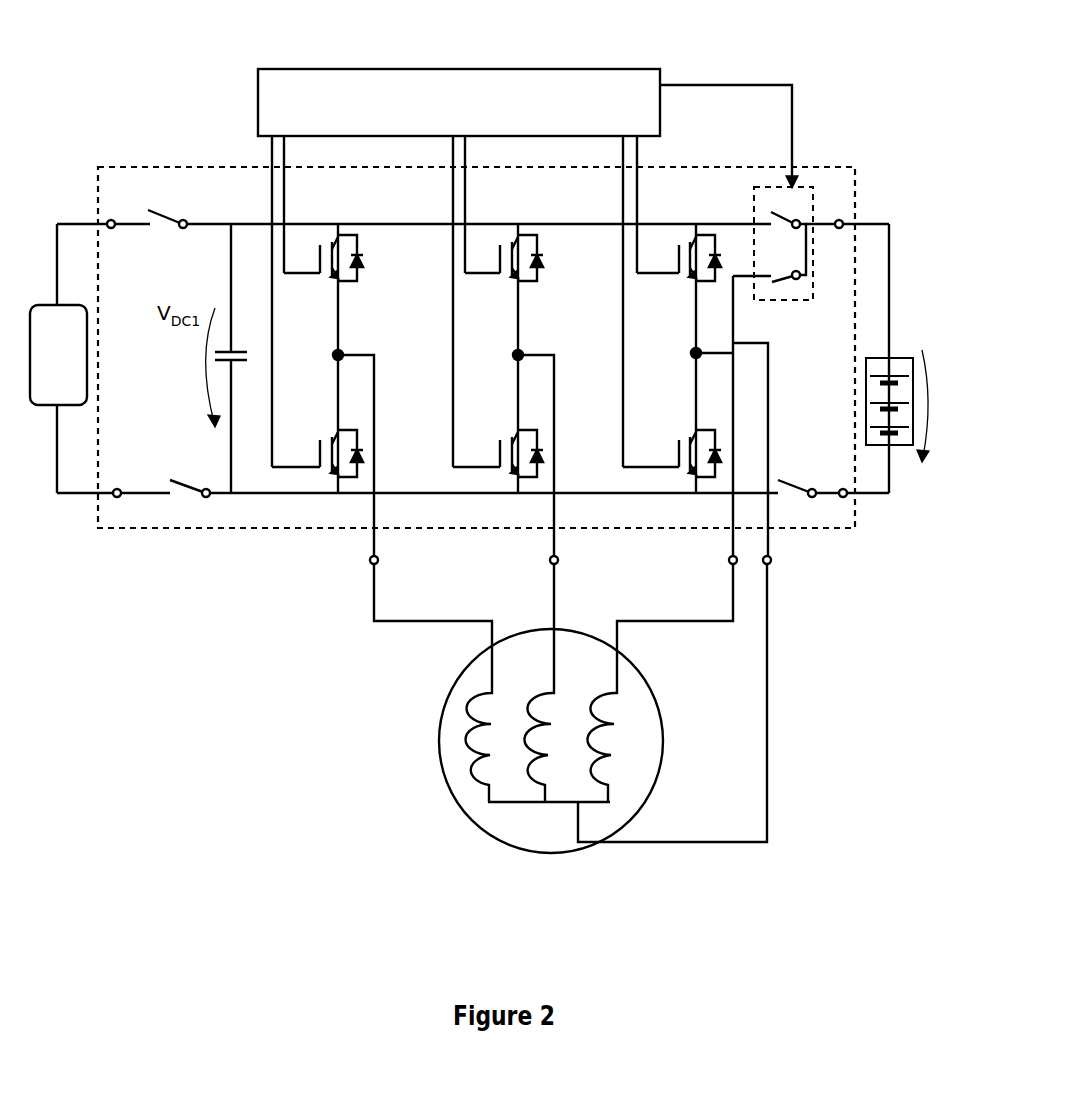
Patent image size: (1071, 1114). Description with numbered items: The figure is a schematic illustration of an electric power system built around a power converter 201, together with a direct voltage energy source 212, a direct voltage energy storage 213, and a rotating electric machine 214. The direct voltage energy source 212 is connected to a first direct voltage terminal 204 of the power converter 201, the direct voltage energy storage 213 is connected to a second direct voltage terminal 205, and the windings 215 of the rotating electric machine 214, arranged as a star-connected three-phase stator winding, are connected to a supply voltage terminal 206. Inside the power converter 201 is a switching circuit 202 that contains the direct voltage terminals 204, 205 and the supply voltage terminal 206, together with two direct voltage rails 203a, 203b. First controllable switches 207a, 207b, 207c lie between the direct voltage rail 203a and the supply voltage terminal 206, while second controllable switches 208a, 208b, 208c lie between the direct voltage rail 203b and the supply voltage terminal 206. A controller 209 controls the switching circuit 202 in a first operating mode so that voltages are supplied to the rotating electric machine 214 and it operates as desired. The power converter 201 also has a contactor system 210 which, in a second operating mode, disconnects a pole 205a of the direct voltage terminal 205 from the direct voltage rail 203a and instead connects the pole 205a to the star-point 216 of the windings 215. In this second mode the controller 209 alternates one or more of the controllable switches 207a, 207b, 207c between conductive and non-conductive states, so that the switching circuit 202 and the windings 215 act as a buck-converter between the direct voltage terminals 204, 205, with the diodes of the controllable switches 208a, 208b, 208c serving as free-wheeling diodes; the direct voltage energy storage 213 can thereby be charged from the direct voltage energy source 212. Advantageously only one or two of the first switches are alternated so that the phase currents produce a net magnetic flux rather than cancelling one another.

The power converter 201 is at (215, 59).
The switching circuit 202 is at (180, 165).
The direct voltage rail 203a is at (427, 228).
The direct voltage rail 203b is at (440, 490).
The first direct voltage terminal 204 is at (131, 212).
The second direct voltage terminal 205 is at (829, 210).
The pole of the direct voltage terminal 205a is at (843, 220).
The supply voltage terminal 206 is at (745, 563).
The first controllable switch 207a is at (694, 245).
The first controllable switch 207b is at (516, 245).
The first controllable switch 207c is at (336, 245).
The second controllable switch 208a is at (695, 432).
The second controllable switch 208b is at (517, 432).
The second controllable switch 208c is at (337, 432).
The controller 209 is at (528, 268).
The contactor system 210 is at (768, 187).
The direct voltage energy source 212 is at (58, 358).
The direct voltage energy storage 213 is at (894, 448).
The rotating electric machine 214 is at (663, 737).
The windings 215 is at (460, 732).
The star-point 216 is at (510, 803).